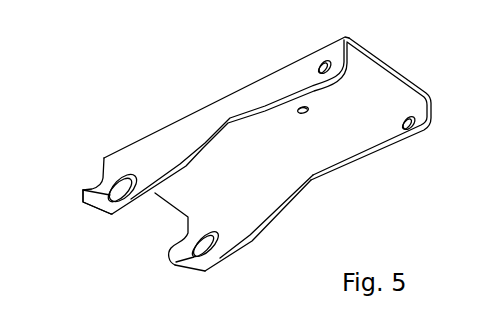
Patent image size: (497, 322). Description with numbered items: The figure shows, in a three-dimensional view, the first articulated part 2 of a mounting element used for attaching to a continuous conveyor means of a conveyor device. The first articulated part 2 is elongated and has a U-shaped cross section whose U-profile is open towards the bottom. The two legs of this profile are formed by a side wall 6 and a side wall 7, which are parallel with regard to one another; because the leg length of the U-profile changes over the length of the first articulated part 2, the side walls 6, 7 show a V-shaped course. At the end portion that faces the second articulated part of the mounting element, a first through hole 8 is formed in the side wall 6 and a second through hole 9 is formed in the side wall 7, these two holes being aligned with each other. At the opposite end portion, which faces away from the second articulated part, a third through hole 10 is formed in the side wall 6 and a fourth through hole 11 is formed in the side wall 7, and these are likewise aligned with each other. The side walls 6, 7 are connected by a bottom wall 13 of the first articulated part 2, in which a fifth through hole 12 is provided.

The first articulated part 2 is at (108, 47).
The side wall 6 is at (113, 215).
The side wall 7 is at (274, 214).
The first through hole 8 is at (318, 60).
The second through hole 9 is at (417, 127).
The third through hole 10 is at (83, 188).
The fourth through hole 11 is at (174, 266).
The fifth through hole 12 is at (312, 110).
The bottom wall 13 is at (396, 70).